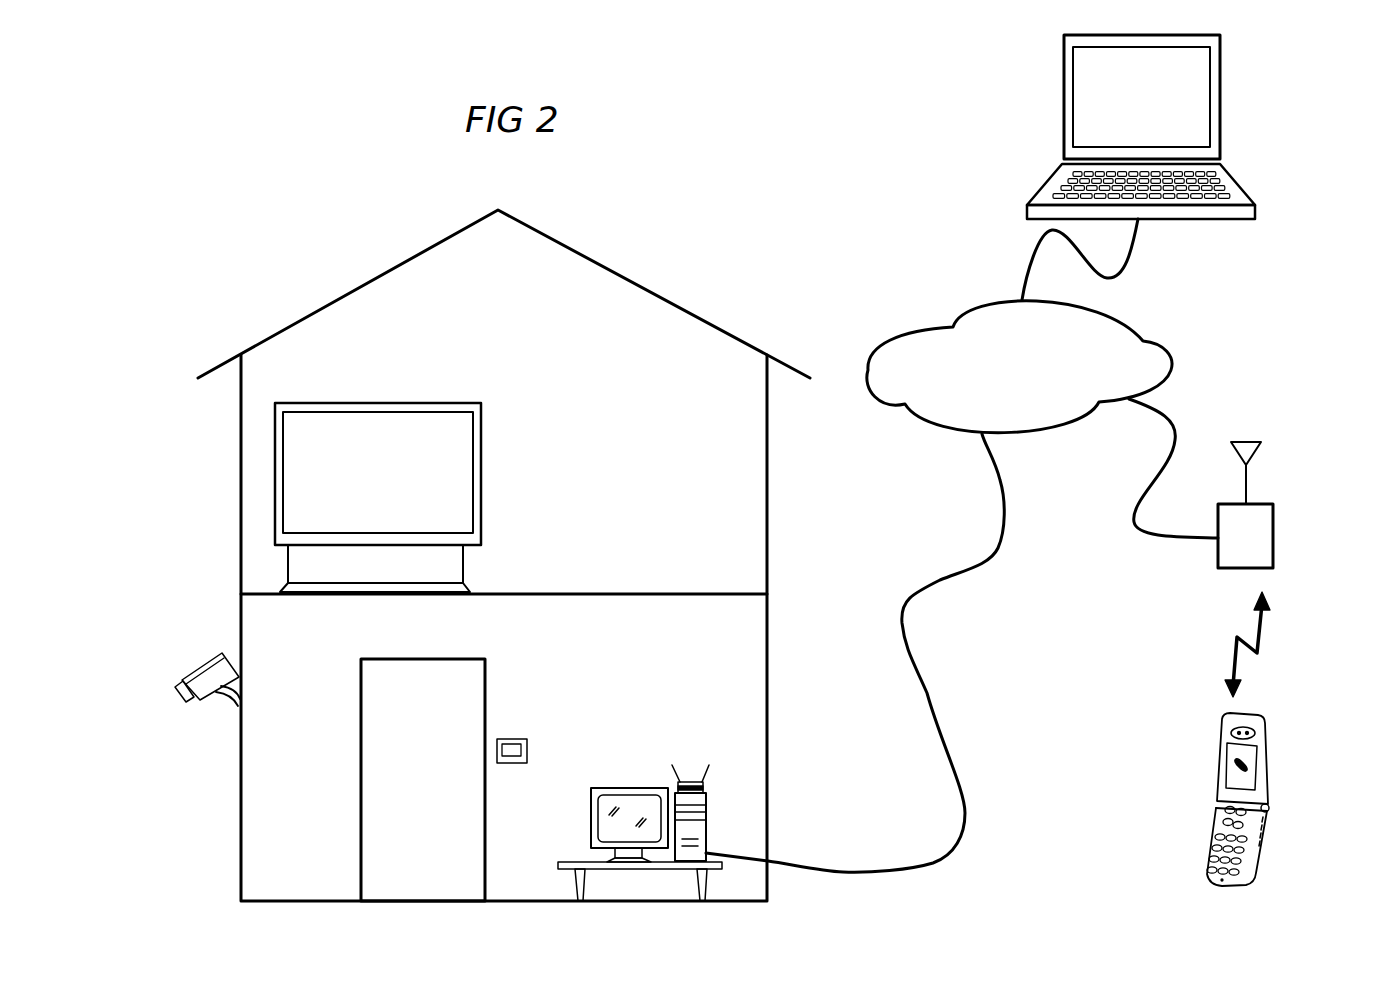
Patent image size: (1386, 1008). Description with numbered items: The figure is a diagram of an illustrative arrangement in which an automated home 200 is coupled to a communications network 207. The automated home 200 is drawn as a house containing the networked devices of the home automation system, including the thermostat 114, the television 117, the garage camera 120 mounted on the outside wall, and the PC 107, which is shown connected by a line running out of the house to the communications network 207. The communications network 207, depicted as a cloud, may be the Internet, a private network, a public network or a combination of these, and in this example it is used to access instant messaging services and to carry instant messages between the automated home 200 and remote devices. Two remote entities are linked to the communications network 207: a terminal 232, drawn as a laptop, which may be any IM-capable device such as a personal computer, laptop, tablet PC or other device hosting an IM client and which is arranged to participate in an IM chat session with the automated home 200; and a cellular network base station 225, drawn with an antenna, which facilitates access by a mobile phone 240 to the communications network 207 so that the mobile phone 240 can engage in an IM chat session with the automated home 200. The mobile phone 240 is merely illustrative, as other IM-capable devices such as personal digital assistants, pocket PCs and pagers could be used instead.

The automated home 200 is at (306, 290).
The television 117 is at (482, 497).
The garage camera 120 is at (203, 663).
The thermostat 114 is at (508, 763).
The PC 107 is at (707, 800).
The communications network 207 is at (896, 348).
The terminal 232 is at (1064, 82).
The cellular network base station 225 is at (1275, 552).
The mobile phone 240 is at (1207, 873).